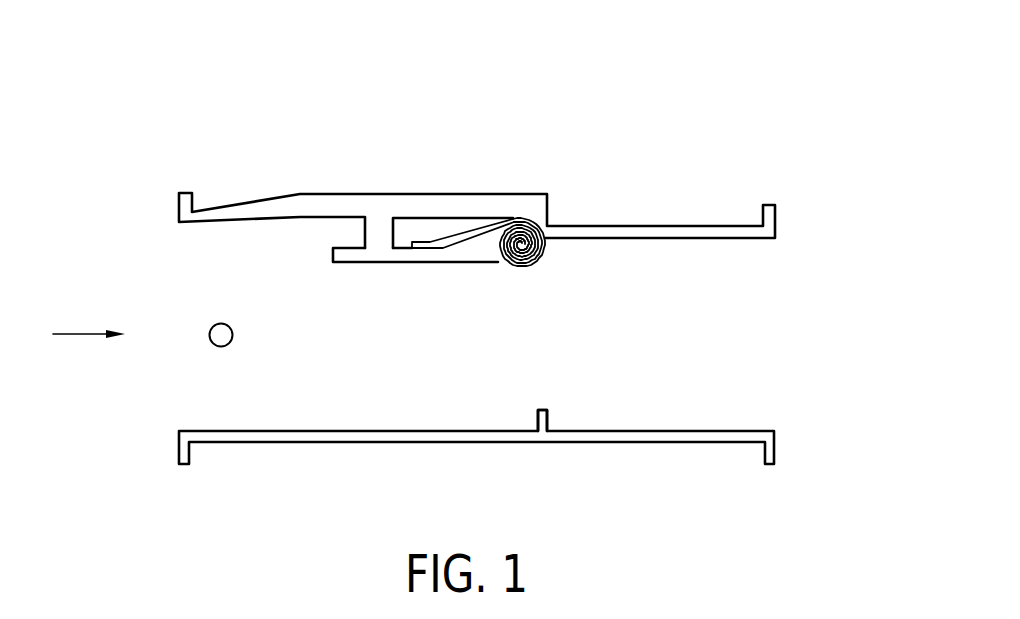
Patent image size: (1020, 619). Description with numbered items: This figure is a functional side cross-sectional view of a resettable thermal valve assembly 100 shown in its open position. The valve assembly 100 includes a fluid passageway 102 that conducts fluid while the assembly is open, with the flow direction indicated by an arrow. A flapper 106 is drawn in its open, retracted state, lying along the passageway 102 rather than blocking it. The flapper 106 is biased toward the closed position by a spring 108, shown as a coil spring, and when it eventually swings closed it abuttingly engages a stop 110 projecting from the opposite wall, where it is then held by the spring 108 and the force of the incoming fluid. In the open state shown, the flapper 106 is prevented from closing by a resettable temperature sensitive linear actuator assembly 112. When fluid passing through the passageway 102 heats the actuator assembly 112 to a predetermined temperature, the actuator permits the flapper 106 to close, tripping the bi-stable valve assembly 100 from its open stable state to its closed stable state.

The thermal valve assembly 100 is at (786, 104).
The fluid passageway 102 is at (476, 394).
The flapper 106 is at (343, 255).
The spring 108 is at (545, 252).
The stop 110 is at (548, 418).
The resettable temperature sensitive linear actuator assembly 112 is at (208, 338).